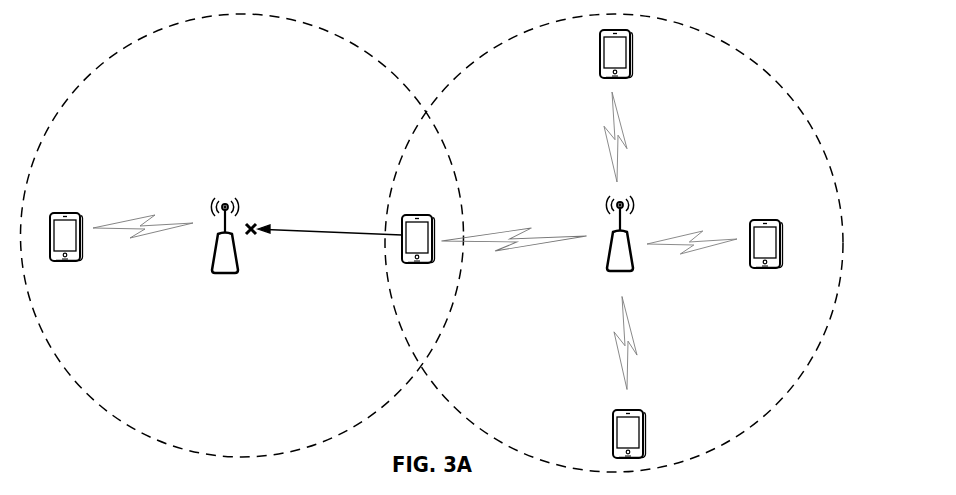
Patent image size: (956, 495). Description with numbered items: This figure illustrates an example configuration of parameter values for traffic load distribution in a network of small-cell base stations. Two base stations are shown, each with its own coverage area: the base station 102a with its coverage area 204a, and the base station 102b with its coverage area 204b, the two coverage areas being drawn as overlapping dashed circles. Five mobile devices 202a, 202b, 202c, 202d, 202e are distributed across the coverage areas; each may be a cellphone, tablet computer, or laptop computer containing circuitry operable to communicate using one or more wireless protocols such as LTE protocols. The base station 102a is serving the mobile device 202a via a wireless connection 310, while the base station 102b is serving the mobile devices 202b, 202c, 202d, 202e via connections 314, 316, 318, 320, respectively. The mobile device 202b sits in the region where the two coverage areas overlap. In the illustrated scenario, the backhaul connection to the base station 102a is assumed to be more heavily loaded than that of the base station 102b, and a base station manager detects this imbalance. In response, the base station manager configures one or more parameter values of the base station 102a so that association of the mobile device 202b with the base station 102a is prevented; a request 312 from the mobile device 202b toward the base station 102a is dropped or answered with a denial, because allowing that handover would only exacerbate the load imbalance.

The coverage area 204a is at (367, 38).
The coverage area 204b is at (744, 42).
The base station 102a is at (214, 272).
The base station 102b is at (609, 272).
The mobile device 202a is at (79, 261).
The mobile device 202b is at (430, 263).
The mobile device 202c is at (646, 418).
The mobile device 202d is at (783, 228).
The mobile device 202e is at (633, 39).
The wireless connection 310 is at (154, 214).
The request 312 is at (312, 231).
The connection 314 is at (518, 232).
The connection 316 is at (636, 345).
The connection 318 is at (700, 236).
The connection 320 is at (623, 135).